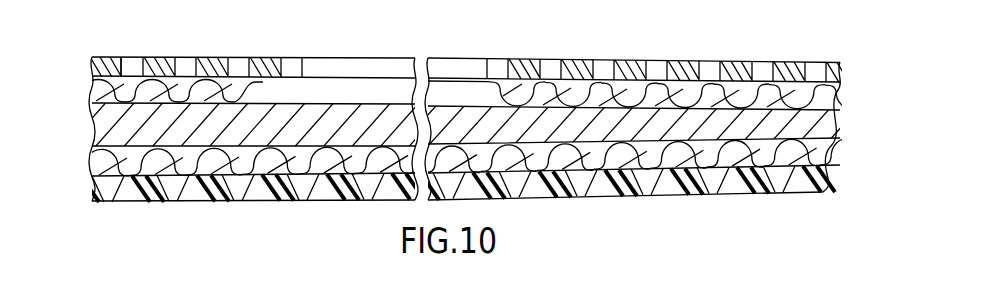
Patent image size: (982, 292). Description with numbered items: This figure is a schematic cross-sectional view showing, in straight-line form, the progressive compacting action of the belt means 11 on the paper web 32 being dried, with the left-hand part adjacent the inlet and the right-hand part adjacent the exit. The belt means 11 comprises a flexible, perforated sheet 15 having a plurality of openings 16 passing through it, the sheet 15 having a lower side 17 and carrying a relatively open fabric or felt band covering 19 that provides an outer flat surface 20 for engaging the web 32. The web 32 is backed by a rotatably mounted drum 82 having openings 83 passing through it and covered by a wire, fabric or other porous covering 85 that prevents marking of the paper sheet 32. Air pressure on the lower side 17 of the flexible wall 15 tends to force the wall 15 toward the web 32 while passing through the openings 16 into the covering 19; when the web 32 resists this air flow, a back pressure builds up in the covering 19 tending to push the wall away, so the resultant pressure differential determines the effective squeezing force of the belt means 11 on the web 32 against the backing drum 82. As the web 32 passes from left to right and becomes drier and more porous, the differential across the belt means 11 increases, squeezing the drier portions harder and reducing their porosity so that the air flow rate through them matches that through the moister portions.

The belt means 11 is at (84, 179).
The flexible perforated sheet 15 is at (137, 199).
The openings 16 is at (203, 201).
The side of flexible sheet 17 is at (333, 201).
The fabric or felt band covering 19 is at (100, 157).
The outer flat surface 20 is at (117, 145).
The paper web 32 is at (93, 107).
The drum 82 is at (571, 59).
The openings 83 is at (517, 60).
The porous covering 85 is at (631, 60).